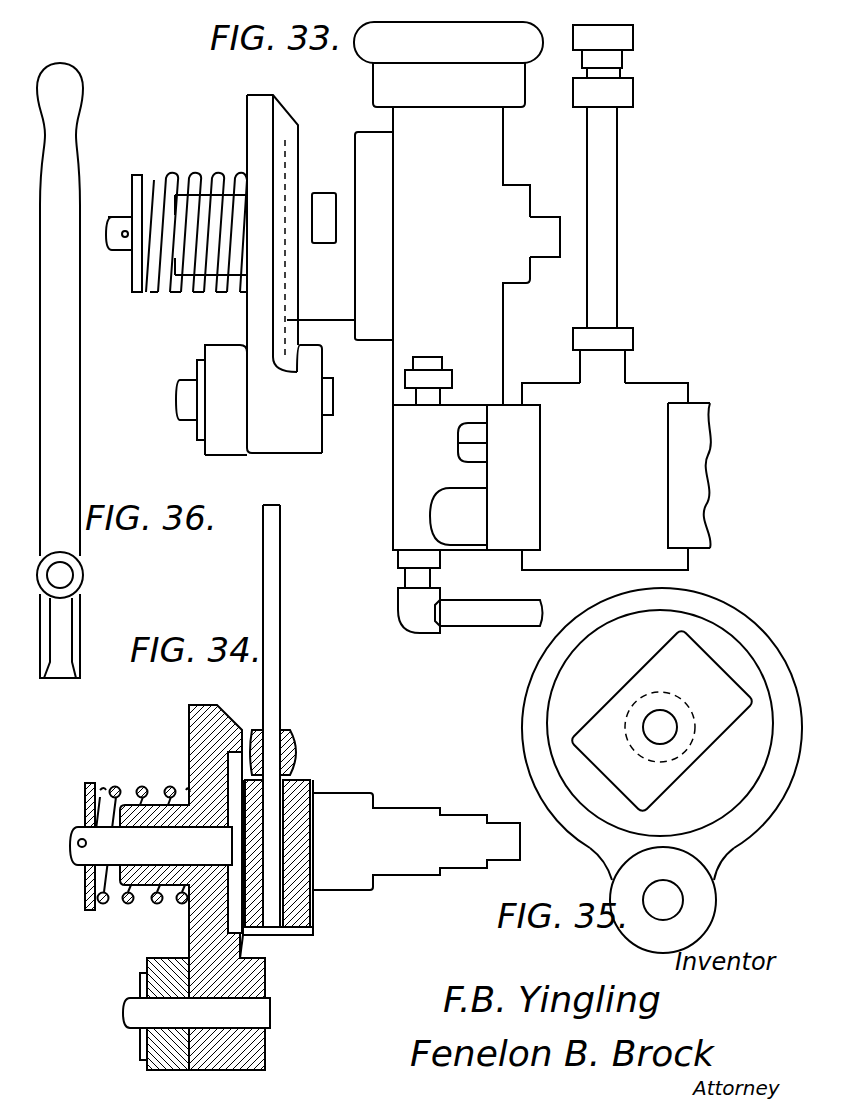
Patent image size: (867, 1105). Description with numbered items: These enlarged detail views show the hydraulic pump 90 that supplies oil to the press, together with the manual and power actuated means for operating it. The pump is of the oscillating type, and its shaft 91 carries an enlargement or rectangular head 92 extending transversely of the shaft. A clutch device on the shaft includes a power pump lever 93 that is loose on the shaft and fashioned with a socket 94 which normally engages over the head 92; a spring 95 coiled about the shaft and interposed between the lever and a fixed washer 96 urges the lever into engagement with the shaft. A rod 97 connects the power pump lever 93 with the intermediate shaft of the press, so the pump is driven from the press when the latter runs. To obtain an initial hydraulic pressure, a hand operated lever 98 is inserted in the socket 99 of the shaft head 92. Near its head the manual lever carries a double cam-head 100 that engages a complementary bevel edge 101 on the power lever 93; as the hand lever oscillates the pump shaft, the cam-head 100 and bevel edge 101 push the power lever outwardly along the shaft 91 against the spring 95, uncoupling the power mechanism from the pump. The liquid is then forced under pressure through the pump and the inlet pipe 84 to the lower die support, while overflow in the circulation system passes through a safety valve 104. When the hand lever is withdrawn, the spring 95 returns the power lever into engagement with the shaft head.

In FIG. 33, the inlet pipe 84 is at (498, 618).
In FIG. 33, the pump 90 is at (532, 296).
In FIG. 33, the shaft 91 is at (546, 214).
In FIG. 34, the shaft 91 is at (364, 808).
In FIG. 33, the rectangular head 92 is at (338, 295).
In FIG. 34, the rectangular head 92 is at (312, 930).
In FIG. 33, the power pump lever 93 is at (247, 118).
In FIG. 34, the power pump lever 93 is at (188, 737).
In FIG. 35, the power pump lever 93 is at (660, 723).
In FIG. 34, the socket 94 is at (256, 932).
In FIG. 35, the socket 94 is at (662, 721).
In FIG. 33, the spring 95 is at (190, 183).
In FIG. 34, the spring 95 is at (145, 758).
In FIG. 33, the fixed washer 96 is at (128, 254).
In FIG. 34, the fixed washer 96 is at (88, 904).
In FIG. 33, the rod 97 is at (217, 367).
In FIG. 34, the rod 97 is at (160, 1056).
In FIG. 36, the hand operated lever 98 is at (78, 457).
In FIG. 34, the hand operated lever 98 is at (284, 666).
In FIG. 33, the socket 99 is at (342, 218).
In FIG. 34, the socket 99 is at (300, 909).
In FIG. 36, the double cam-head 100 is at (66, 577).
In FIG. 34, the double cam-head 100 is at (300, 742).
In FIG. 33, the bevel edge 101 is at (290, 112).
In FIG. 34, the bevel edge 101 is at (242, 728).
In FIG. 35, the bevel edge 101 is at (733, 618).
In FIG. 33, the safety valve 104 is at (619, 152).